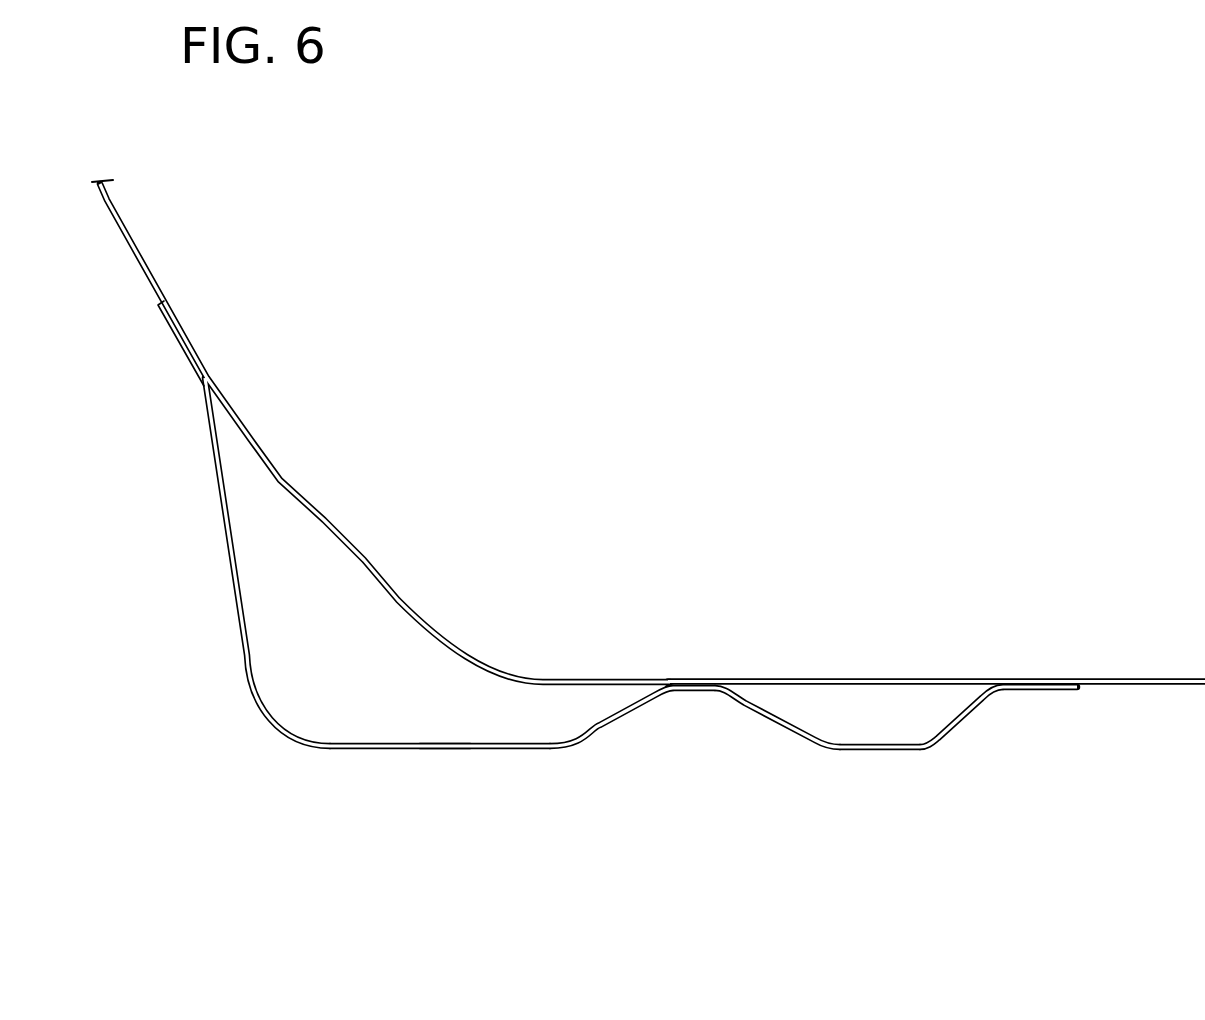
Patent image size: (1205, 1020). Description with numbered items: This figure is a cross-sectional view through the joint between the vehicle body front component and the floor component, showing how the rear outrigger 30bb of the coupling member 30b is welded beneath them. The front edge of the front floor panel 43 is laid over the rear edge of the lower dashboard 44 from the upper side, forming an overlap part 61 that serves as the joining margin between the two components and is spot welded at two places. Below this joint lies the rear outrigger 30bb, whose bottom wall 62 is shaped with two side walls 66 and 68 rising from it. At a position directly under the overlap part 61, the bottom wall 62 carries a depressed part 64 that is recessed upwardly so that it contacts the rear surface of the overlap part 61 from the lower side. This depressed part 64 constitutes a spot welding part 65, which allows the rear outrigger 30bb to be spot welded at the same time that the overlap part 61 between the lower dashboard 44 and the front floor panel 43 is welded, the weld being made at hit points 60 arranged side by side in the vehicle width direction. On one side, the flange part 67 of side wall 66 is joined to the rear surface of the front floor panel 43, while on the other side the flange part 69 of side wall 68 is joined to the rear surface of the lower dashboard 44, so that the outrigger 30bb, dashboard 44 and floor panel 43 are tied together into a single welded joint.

The rear outrigger 30bb is at (473, 815).
The coupling member 30b is at (440, 764).
The front floor panel 43 is at (1133, 678).
The lower dashboard 44 is at (320, 518).
The hit point 60 is at (697, 692).
The overlap part 61 is at (690, 680).
The bottom wall 62 is at (363, 750).
The depressed part 64 is at (710, 752).
The spot welding part 65 is at (675, 702).
The side wall 66 is at (953, 720).
The flange part 67 is at (1057, 687).
The side wall 68 is at (232, 565).
The flange part 69 is at (178, 340).